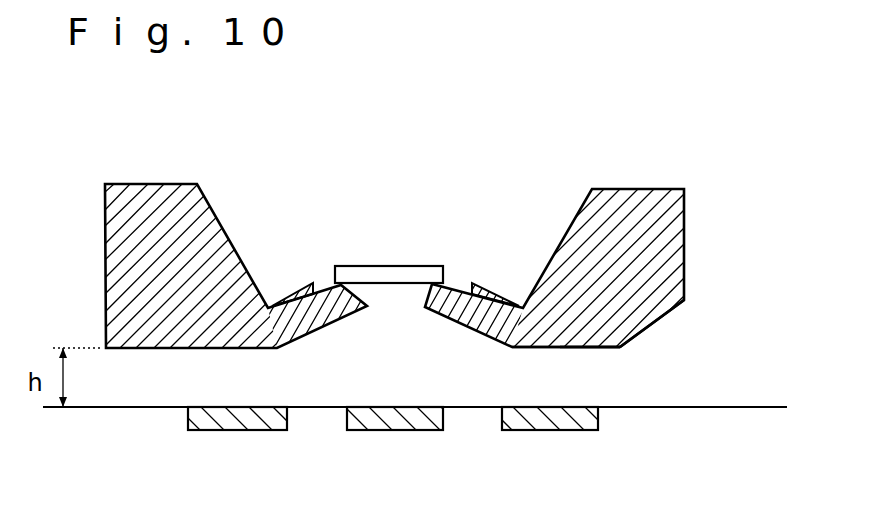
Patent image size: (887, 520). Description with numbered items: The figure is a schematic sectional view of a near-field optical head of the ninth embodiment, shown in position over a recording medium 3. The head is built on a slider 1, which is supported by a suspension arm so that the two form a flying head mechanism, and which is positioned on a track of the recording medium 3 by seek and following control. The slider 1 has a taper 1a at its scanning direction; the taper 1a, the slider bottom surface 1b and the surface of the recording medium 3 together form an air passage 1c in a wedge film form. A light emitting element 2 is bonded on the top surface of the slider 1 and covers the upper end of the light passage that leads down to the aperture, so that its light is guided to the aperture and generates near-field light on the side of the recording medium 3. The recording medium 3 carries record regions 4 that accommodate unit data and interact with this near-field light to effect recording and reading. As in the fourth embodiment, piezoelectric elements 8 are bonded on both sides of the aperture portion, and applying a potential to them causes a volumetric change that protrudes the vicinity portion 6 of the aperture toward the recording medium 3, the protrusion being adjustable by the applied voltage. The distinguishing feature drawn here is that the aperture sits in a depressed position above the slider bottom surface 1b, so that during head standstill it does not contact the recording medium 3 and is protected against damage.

The slider 1 is at (443, 313).
The taper 1a is at (670, 310).
The slider bottom surface 1b is at (575, 350).
The air passage 1c is at (644, 376).
The light emitting element 2 is at (400, 273).
The recording medium 3 is at (423, 433).
The record region 4 is at (578, 430).
The protruding portion 6 is at (323, 327).
The piezoelectric elements 8 is at (492, 285).